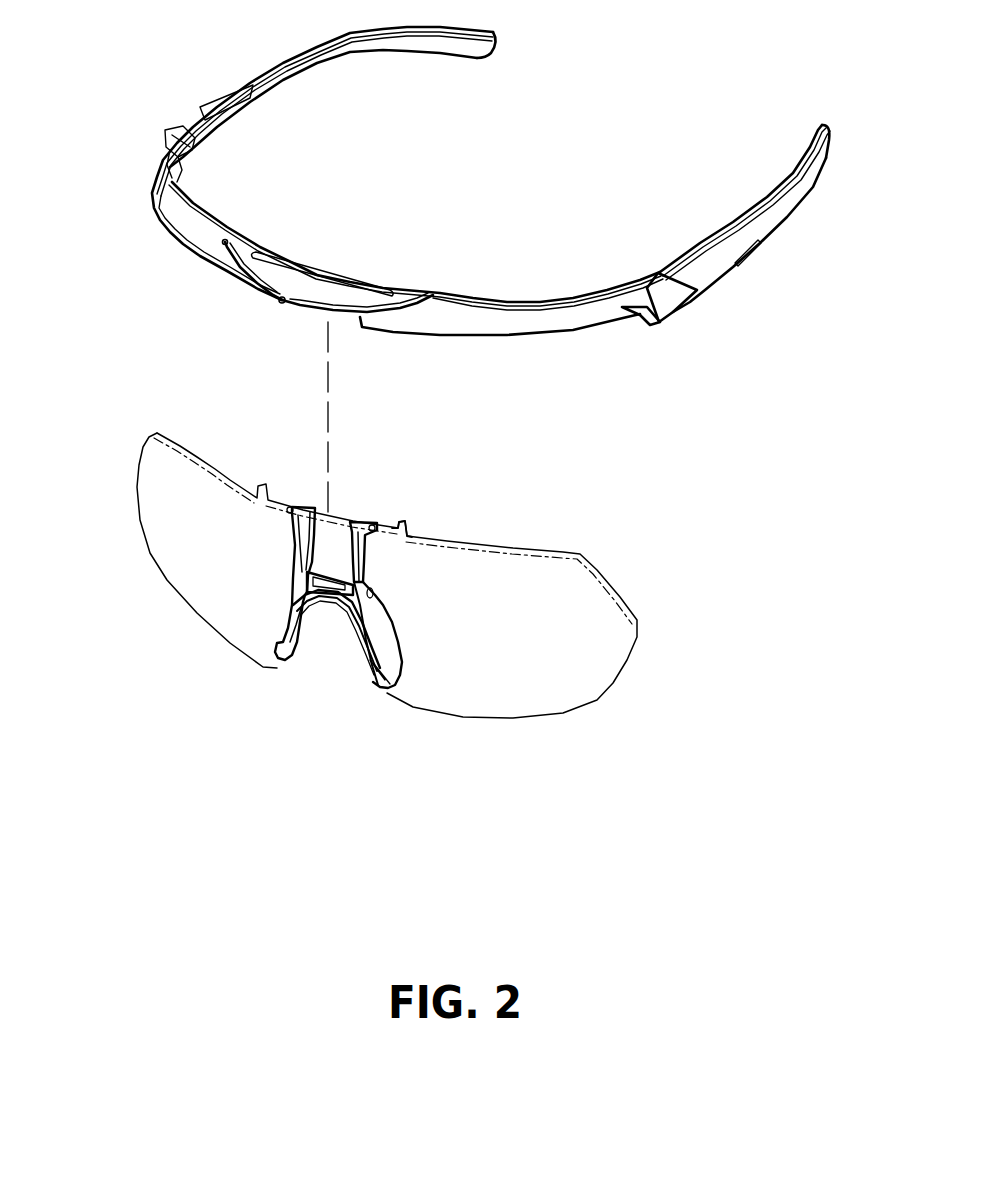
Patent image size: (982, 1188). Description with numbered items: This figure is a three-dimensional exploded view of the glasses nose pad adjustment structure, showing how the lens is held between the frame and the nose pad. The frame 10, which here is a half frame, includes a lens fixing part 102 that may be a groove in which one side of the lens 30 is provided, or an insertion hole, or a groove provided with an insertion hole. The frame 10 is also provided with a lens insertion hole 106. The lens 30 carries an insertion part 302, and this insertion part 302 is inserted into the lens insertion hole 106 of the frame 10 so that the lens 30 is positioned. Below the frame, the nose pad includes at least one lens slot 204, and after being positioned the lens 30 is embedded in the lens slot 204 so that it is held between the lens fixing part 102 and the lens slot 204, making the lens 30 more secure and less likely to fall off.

The frame 10 is at (451, 203).
The lens fixing part 102 is at (277, 293).
The lens insertion hole 106 is at (297, 270).
The lens 30 is at (402, 567).
The insertion part 302 is at (386, 520).
The lens slot 204 is at (385, 688).